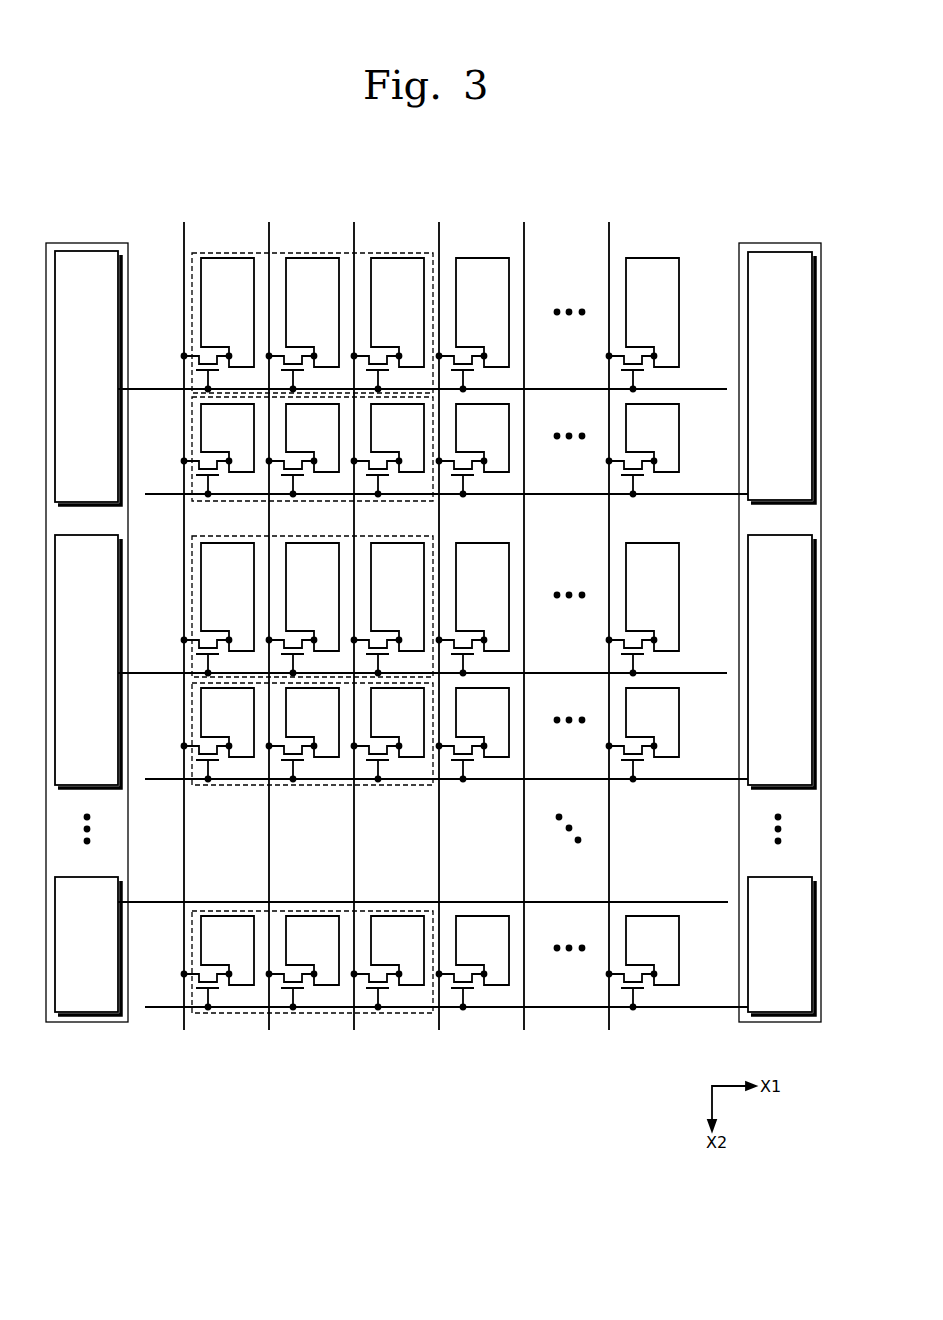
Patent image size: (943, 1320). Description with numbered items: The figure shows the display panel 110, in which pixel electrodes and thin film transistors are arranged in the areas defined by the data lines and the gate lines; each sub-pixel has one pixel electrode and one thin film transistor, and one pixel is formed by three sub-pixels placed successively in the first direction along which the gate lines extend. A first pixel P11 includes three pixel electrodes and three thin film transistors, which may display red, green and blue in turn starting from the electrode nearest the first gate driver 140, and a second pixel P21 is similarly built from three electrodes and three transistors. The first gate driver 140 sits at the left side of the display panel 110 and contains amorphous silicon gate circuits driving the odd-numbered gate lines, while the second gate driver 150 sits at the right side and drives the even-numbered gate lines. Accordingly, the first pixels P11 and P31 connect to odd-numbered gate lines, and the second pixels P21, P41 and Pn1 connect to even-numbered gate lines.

The display panel 110 is at (718, 192).
The first gate driver 140 is at (102, 243).
The second gate driver 150 is at (797, 243).
The first pixel P11 is at (314, 253).
The second pixel P21 is at (255, 501).
The first pixel P31 is at (360, 536).
The second pixel P41 is at (377, 785).
The second pixel Pn1 is at (308, 909).